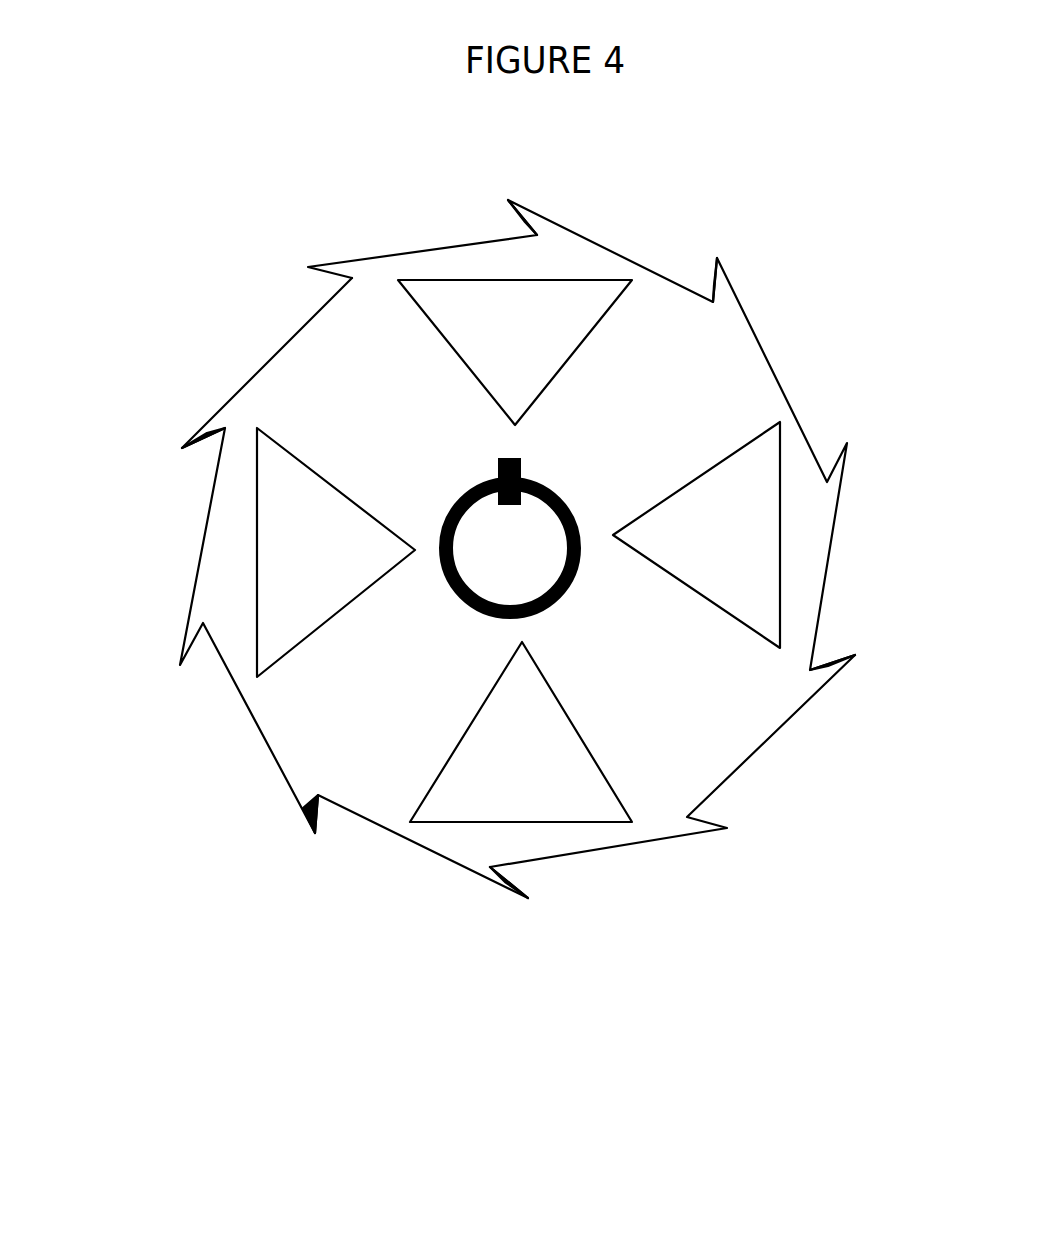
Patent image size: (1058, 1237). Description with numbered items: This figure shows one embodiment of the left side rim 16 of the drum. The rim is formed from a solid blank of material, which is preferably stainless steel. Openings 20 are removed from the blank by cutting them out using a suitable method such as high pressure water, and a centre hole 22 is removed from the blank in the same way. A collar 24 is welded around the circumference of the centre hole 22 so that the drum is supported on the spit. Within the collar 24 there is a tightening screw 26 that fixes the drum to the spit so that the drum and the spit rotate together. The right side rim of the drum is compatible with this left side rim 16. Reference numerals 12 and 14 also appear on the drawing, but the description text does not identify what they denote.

The display icon 12 is at (478, 580).
The rotational arrow 14 is at (617, 248).
The left side rim 16 is at (522, 910).
The openings 20 is at (477, 313).
The centre hole 22 is at (538, 567).
The collar 24 is at (520, 509).
The tightening screw 26 is at (510, 457).